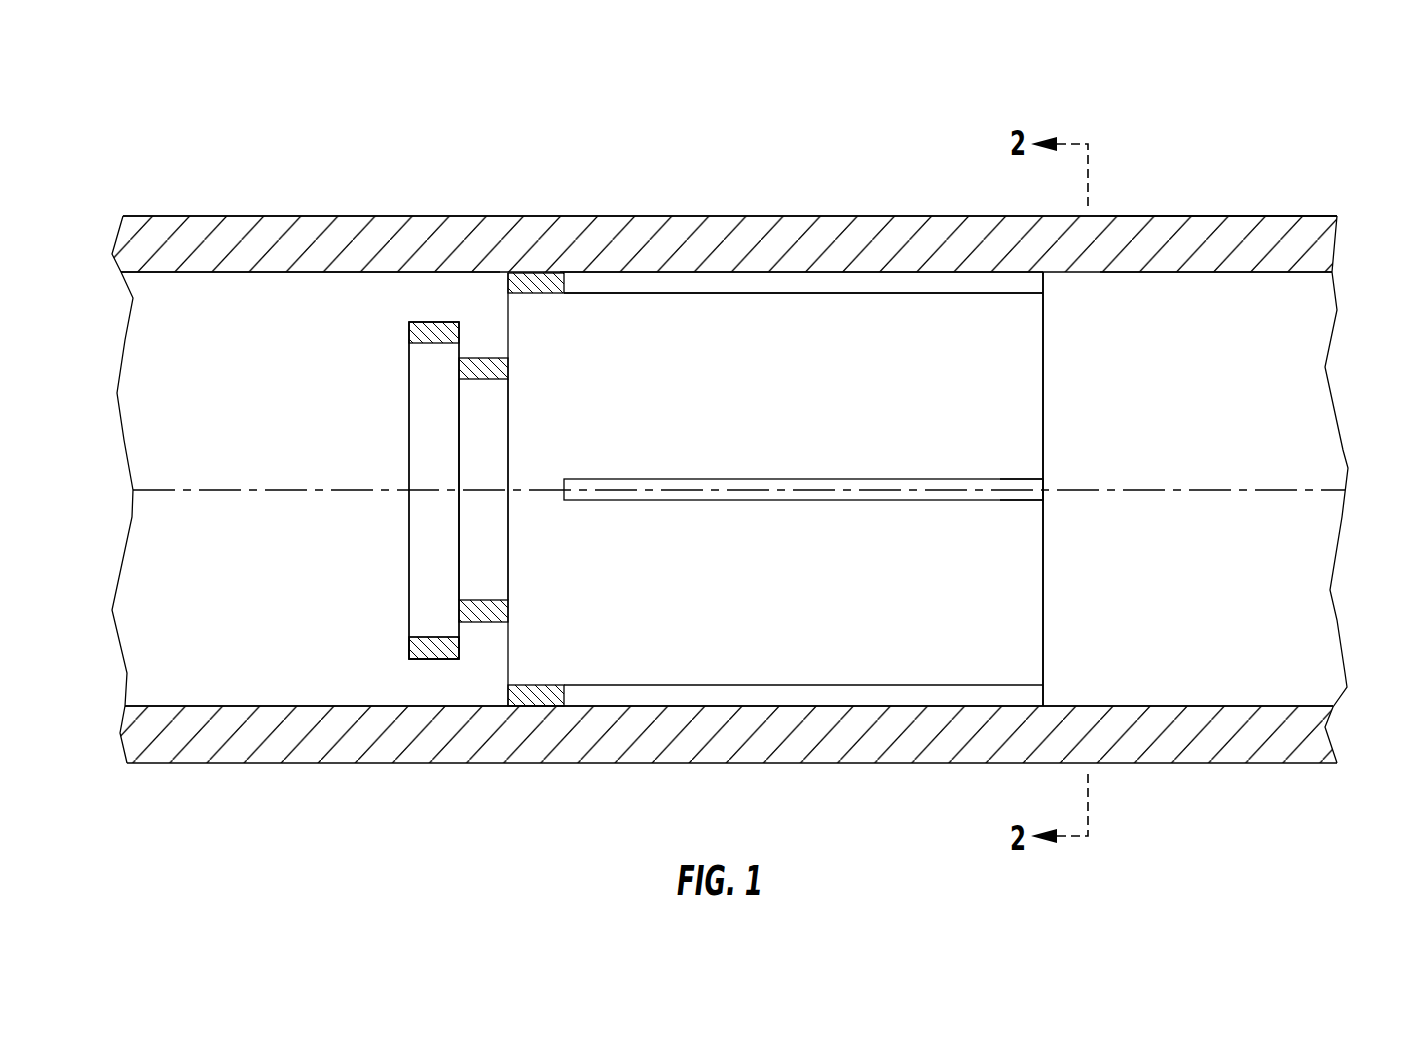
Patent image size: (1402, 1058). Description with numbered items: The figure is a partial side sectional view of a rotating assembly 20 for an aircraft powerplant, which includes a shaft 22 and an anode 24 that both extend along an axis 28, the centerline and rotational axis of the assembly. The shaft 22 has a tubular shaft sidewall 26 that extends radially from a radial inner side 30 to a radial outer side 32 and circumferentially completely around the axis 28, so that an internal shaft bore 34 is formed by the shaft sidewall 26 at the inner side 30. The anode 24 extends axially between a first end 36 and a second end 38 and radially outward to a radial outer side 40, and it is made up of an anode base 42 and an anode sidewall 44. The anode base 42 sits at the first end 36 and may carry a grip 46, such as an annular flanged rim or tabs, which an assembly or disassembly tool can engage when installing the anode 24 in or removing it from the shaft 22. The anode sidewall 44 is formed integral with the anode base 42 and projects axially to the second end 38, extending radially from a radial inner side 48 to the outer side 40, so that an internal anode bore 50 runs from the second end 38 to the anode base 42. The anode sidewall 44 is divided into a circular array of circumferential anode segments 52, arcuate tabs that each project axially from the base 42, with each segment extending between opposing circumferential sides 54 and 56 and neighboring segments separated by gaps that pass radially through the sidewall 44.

The rotating assembly 20 is at (66, 92).
The shaft 22 is at (98, 233).
The anode 24 is at (1072, 367).
The shaft sidewall 26 is at (1322, 251).
The axis 28 is at (148, 490).
The radial inner side 30 is at (148, 273).
The radial outer side 32 is at (163, 216).
The shaft bore 34 is at (255, 399).
The first end 36 is at (408, 648).
The second end 38 is at (1015, 690).
The radial outer side 40 is at (750, 272).
The anode base 42 is at (381, 366).
The anode sidewall 44 is at (1046, 420).
The grip 46 is at (430, 660).
The radial inner side 48 is at (765, 294).
The anode bore 50 is at (1012, 576).
The anode segments 52 is at (789, 398).
The circumferential side 54 is at (1040, 484).
The circumferential side 56 is at (1033, 284).